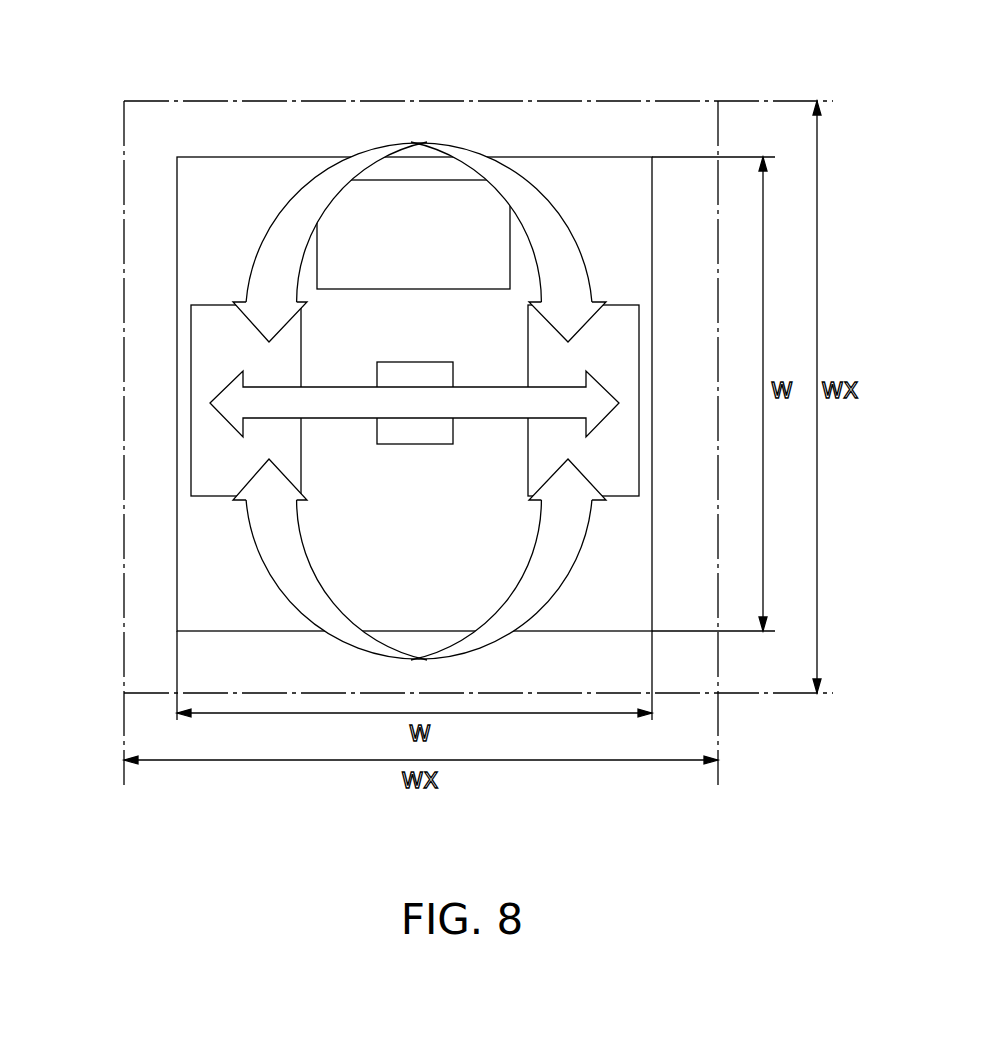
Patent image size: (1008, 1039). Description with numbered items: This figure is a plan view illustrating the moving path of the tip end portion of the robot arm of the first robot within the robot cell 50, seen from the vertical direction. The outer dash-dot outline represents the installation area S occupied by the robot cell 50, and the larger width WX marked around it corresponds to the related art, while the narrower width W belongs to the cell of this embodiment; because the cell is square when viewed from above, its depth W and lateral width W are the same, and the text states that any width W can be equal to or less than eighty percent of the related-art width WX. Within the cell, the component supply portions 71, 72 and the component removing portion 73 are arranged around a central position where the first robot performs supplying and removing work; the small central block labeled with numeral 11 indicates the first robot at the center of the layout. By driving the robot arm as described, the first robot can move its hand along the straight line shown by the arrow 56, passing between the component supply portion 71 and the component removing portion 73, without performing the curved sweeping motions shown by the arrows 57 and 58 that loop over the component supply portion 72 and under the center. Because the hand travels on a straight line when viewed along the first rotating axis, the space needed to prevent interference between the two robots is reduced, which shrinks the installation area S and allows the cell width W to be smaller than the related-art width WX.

The robot cell 50 is at (705, 86).
The area S is at (628, 157).
The arrow 57 is at (477, 149).
The arrow 58 is at (500, 643).
The arrow 56 is at (503, 421).
The component supply portion 71 is at (203, 466).
The component supply portion 72 is at (486, 218).
The component removing portion 73 is at (625, 466).
The head (1a) 11 is at (405, 438).